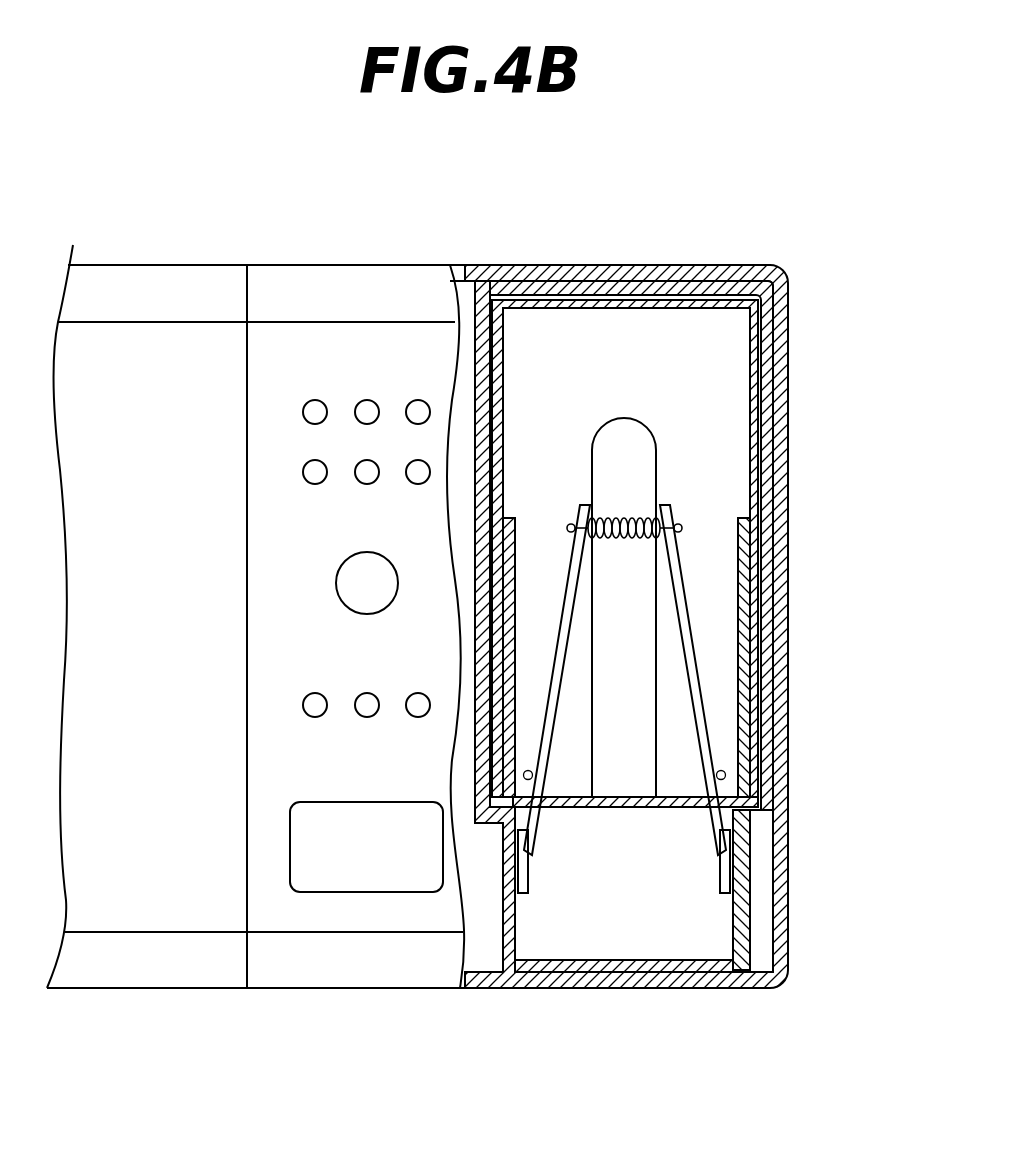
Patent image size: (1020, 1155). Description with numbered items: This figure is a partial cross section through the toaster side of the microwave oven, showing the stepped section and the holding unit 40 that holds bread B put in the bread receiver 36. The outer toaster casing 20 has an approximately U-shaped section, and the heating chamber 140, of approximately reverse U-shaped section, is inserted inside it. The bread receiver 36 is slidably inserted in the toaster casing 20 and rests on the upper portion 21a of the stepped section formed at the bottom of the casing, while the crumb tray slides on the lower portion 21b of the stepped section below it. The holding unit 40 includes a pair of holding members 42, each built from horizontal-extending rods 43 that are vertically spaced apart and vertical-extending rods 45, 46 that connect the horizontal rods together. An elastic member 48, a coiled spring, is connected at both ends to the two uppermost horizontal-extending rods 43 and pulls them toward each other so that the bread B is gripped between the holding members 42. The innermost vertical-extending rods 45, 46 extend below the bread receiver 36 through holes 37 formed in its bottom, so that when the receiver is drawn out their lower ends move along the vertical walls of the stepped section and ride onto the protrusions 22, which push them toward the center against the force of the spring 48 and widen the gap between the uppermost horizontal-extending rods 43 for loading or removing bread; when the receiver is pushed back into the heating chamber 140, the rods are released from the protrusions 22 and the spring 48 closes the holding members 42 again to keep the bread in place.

The toaster casing 20 is at (768, 768).
The upper portion of the stepped section 21a is at (774, 808).
The lower portion of the stepped section 21b is at (638, 968).
The protrusion 22 is at (728, 866).
The bread receiver 36 is at (745, 692).
The hole 37 is at (538, 802).
The holding unit 40 is at (705, 515).
The holding member 42 is at (568, 524).
The horizontal-extending rod 43 is at (676, 530).
The vertical-extending rod 45 is at (548, 748).
The second lead wire 46 is at (703, 758).
The elastic member 48 is at (628, 528).
The heating chamber 140 is at (757, 326).
The battery B is at (640, 445).